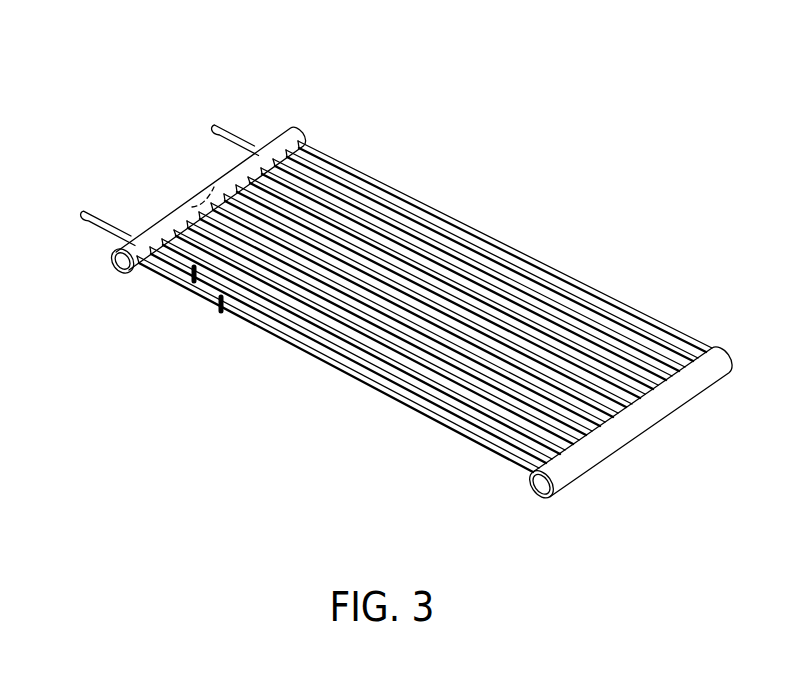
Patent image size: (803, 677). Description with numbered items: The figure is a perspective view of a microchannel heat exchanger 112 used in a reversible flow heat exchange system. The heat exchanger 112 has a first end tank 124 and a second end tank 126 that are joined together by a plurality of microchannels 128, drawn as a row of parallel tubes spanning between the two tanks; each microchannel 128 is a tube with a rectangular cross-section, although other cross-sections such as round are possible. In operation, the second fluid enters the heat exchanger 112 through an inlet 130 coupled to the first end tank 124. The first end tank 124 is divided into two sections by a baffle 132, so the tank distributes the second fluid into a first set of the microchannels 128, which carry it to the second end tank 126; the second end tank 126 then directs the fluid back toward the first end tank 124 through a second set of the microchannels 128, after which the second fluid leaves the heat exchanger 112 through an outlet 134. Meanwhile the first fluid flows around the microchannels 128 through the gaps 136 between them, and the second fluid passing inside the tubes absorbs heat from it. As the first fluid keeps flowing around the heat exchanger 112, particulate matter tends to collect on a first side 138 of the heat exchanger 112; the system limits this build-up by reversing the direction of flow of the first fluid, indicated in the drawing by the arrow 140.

The heat exchanger 112 is at (383, 269).
The first end tank 124 is at (159, 221).
The second end tank 126 is at (651, 434).
The plurality of microchannels 128 is at (252, 318).
The inlet 130 is at (88, 223).
The baffle 132 is at (228, 195).
The outlet 134 is at (228, 124).
The gaps 136 is at (193, 284).
The first side 138 is at (427, 443).
The flow direction 140 is at (507, 215).